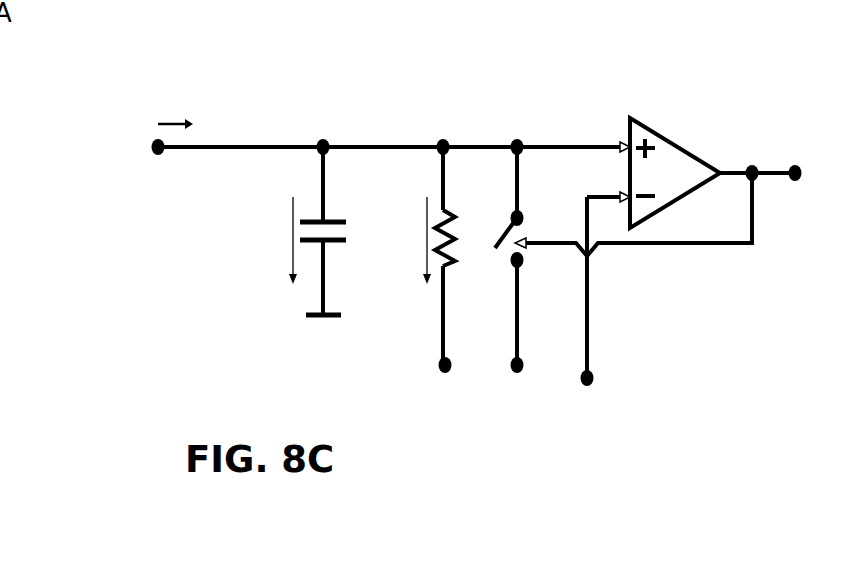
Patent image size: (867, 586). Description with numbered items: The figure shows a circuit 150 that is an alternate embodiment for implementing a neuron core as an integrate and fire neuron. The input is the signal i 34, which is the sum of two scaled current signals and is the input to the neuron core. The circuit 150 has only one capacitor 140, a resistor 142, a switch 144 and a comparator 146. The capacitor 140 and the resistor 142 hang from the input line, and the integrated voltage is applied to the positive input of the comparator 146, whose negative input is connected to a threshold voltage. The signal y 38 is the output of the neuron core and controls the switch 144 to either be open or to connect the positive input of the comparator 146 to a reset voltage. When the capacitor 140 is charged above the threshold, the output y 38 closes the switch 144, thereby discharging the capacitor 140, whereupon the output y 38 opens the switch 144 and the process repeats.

The signal i 34 is at (223, 143).
The signal y 38 is at (765, 168).
The capacitor 140 is at (314, 252).
The resistor 142 is at (438, 266).
The switch 144 is at (530, 198).
The comparator 146 is at (668, 137).
The circuit 150 is at (425, 92).